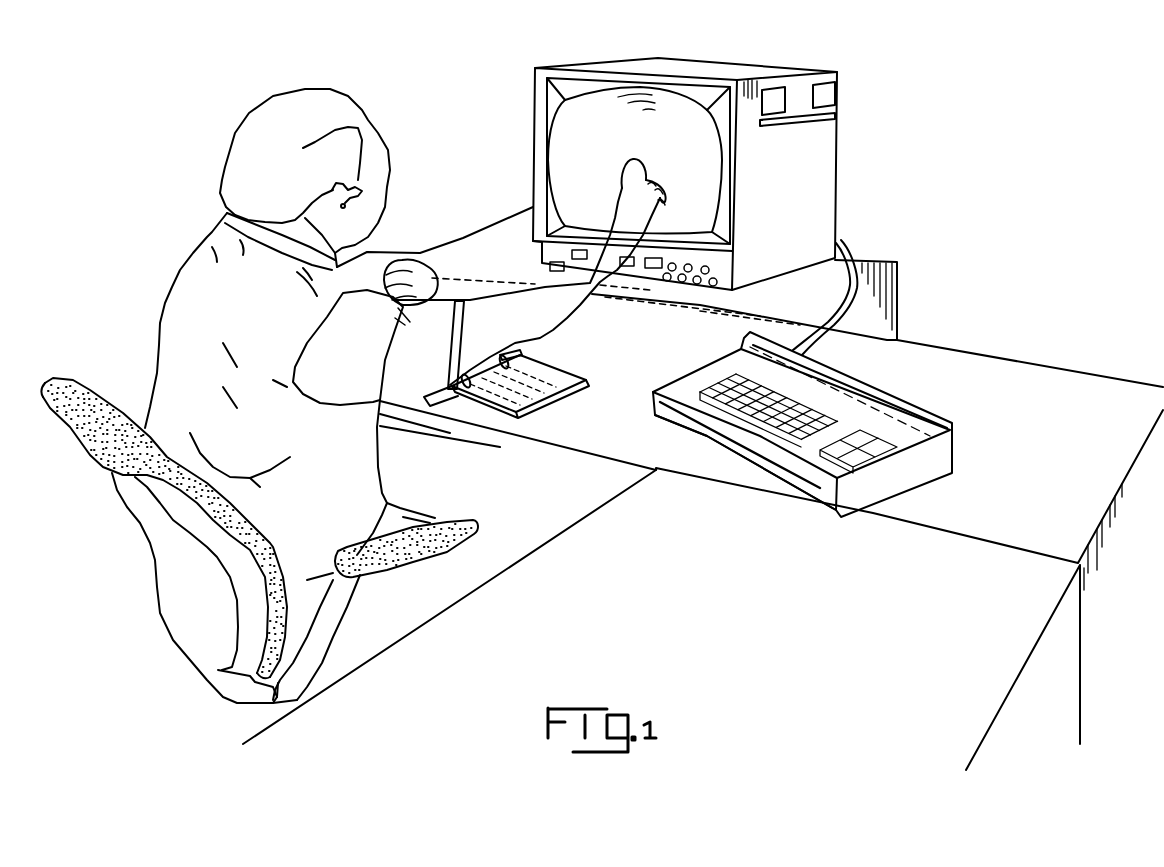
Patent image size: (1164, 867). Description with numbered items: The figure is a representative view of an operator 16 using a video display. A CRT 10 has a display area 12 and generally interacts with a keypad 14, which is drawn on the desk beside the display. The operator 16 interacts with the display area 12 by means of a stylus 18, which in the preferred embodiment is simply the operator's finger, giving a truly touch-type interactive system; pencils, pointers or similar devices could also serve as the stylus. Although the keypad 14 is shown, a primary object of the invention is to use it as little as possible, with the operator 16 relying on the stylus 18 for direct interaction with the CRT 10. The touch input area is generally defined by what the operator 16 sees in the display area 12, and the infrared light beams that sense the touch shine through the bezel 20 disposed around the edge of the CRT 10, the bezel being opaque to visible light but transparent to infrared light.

The CRT 10 is at (838, 181).
The display area 12 is at (565, 152).
The keypad 14 is at (902, 397).
The operator 16 is at (329, 94).
The stylus 18 is at (640, 160).
The bezel 20 is at (558, 108).